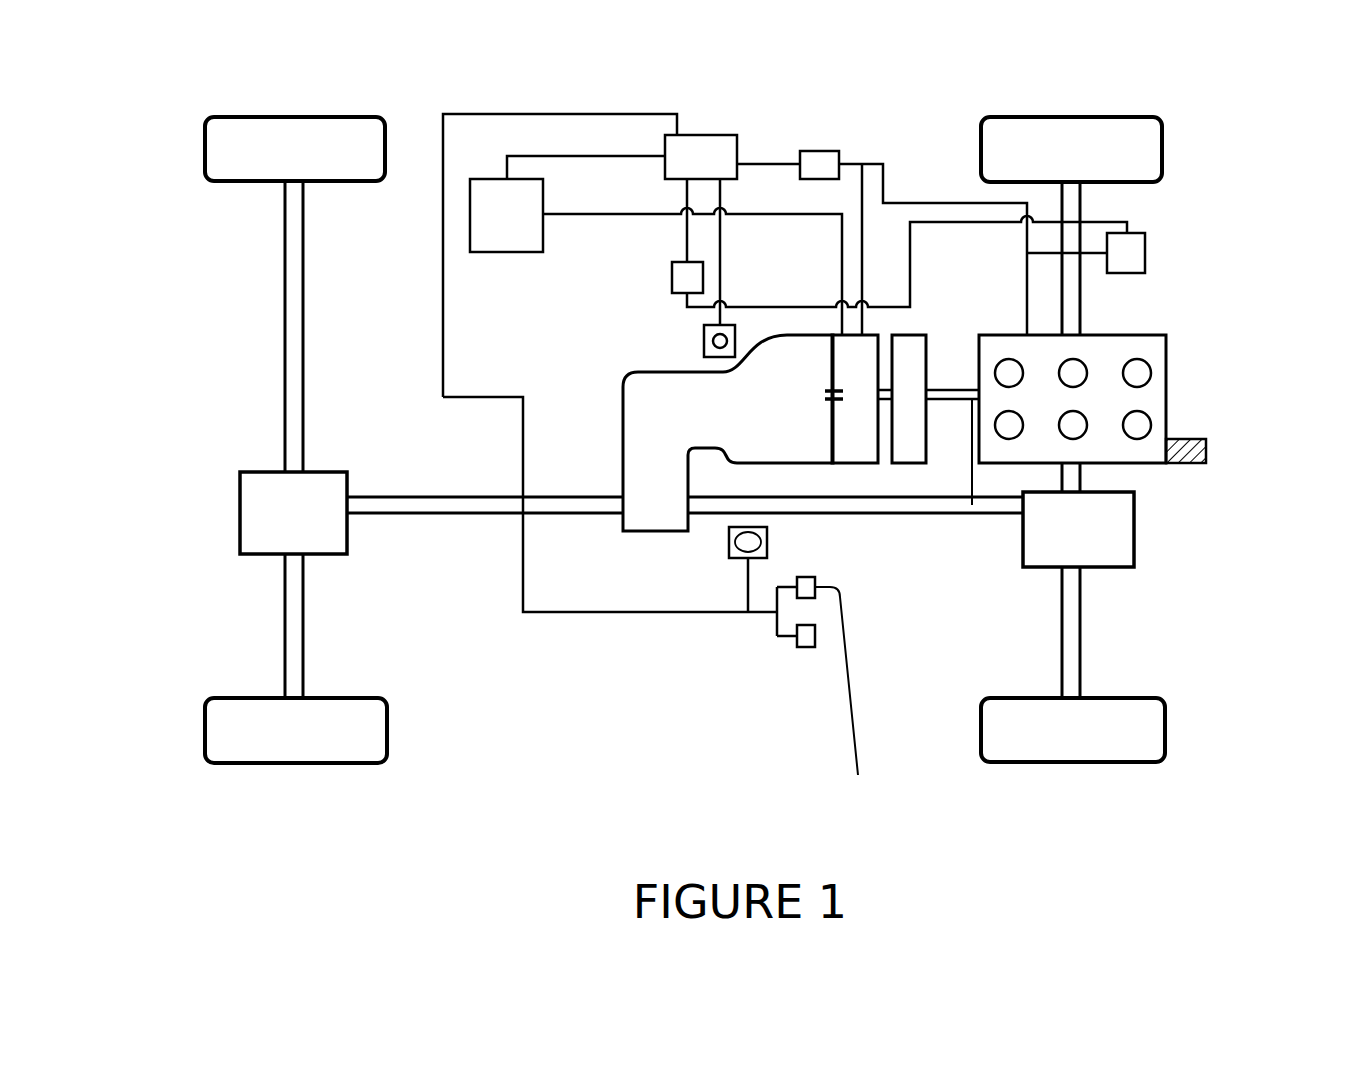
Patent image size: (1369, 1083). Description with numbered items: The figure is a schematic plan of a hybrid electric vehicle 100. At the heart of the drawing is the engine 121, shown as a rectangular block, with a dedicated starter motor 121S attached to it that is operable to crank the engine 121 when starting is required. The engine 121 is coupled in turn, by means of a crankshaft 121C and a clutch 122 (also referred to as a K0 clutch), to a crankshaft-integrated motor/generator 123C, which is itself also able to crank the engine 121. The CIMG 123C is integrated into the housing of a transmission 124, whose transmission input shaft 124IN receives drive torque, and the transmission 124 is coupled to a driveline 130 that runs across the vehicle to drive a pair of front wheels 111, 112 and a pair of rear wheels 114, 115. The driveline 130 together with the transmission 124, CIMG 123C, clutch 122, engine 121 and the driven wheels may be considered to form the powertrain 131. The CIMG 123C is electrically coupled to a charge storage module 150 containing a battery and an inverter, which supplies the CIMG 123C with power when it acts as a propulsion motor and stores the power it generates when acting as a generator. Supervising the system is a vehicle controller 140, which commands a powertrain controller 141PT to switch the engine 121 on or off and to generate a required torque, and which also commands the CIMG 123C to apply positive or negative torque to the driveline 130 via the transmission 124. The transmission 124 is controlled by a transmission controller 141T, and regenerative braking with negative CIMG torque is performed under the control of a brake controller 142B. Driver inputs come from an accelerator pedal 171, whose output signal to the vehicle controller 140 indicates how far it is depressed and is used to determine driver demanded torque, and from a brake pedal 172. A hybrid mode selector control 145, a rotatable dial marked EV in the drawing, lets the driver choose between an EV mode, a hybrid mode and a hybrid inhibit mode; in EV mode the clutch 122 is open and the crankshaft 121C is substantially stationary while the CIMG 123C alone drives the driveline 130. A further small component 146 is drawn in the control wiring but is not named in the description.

The hybrid electric vehicle 100 is at (1250, 91).
The front wheel 111 is at (1147, 148).
The front wheel 112 is at (1141, 730).
The rear wheel 114 is at (215, 154).
The rear wheel 115 is at (220, 728).
The engine 121 is at (1155, 365).
The dedicated starter motor 121S is at (1199, 450).
The crankshaft 121C is at (972, 505).
The clutch 122 is at (907, 463).
The crankshaft-integrated motor/generator 123C is at (857, 440).
The transmission 124 is at (662, 515).
The transmission input shaft 124IN is at (827, 391).
The driveline 130 is at (480, 550).
The powertrain 131 is at (925, 552).
The vehicle controller 140 is at (700, 133).
The powertrain controller 141PT is at (822, 150).
The transmission controller 141T is at (672, 275).
The brake controller 142B is at (1145, 253).
The hybrid mode selector control 145 is at (735, 558).
The switch 146 is at (703, 340).
The charge storage module 150 is at (512, 235).
The accelerator pedal 171 is at (805, 647).
The brake pedal 172 is at (838, 695).